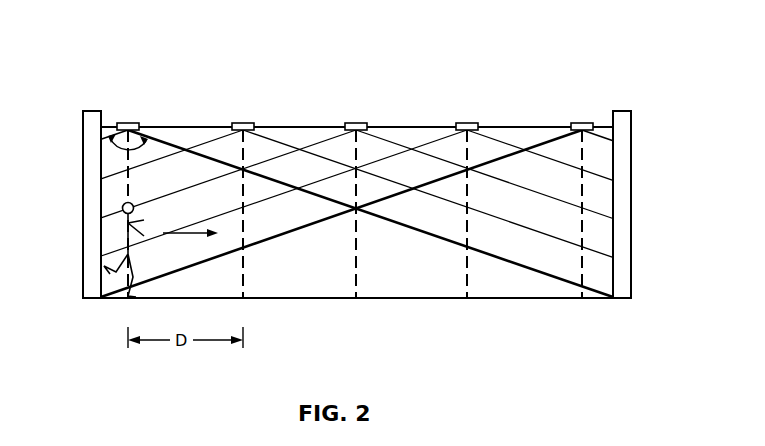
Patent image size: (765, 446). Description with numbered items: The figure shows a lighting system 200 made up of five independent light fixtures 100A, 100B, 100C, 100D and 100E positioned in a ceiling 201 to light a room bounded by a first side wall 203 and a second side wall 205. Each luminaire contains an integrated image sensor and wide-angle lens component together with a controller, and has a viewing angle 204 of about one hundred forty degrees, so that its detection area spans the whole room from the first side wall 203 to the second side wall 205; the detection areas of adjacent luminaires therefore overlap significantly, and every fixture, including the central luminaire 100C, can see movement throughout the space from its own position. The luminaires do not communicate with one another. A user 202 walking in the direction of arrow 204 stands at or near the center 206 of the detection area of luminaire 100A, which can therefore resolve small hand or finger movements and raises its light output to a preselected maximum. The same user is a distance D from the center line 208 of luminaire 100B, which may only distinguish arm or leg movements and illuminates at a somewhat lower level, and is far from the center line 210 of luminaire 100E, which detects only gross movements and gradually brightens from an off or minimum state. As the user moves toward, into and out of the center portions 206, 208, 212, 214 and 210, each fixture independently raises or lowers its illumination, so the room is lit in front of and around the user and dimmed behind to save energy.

The lighting system 200 is at (532, 36).
The ceiling 201 is at (183, 126).
The user 202 is at (138, 197).
The first side wall 203 is at (92, 111).
The viewing angle / arrow 204 is at (123, 152).
The second side wall 205 is at (626, 111).
The center 206 is at (129, 225).
The center line 208 is at (244, 225).
The center line 210 is at (582, 225).
The center portion 212 is at (357, 225).
The center portion 214 is at (467, 225).
The light fixture 100A is at (128, 123).
The light fixture 100B is at (243, 123).
The light fixture 100C is at (356, 123).
The light fixture 100D is at (467, 123).
The light fixture 100E is at (582, 123).